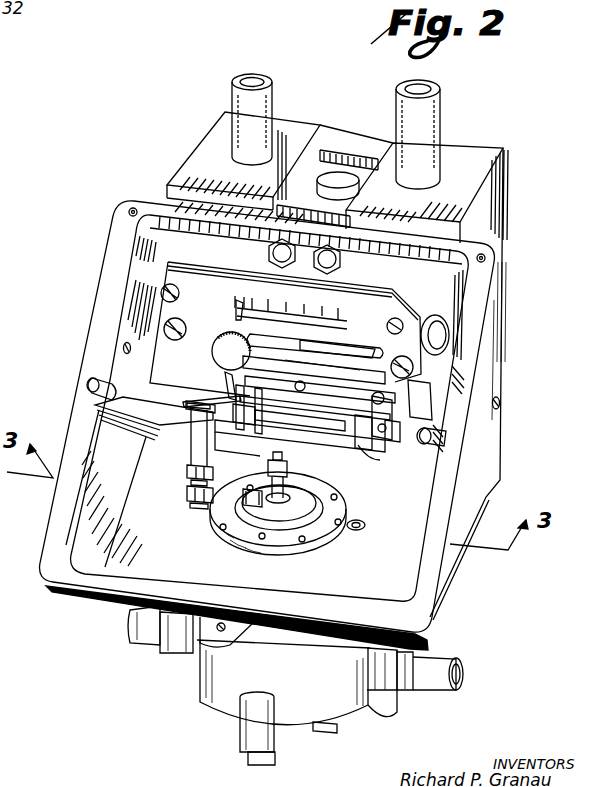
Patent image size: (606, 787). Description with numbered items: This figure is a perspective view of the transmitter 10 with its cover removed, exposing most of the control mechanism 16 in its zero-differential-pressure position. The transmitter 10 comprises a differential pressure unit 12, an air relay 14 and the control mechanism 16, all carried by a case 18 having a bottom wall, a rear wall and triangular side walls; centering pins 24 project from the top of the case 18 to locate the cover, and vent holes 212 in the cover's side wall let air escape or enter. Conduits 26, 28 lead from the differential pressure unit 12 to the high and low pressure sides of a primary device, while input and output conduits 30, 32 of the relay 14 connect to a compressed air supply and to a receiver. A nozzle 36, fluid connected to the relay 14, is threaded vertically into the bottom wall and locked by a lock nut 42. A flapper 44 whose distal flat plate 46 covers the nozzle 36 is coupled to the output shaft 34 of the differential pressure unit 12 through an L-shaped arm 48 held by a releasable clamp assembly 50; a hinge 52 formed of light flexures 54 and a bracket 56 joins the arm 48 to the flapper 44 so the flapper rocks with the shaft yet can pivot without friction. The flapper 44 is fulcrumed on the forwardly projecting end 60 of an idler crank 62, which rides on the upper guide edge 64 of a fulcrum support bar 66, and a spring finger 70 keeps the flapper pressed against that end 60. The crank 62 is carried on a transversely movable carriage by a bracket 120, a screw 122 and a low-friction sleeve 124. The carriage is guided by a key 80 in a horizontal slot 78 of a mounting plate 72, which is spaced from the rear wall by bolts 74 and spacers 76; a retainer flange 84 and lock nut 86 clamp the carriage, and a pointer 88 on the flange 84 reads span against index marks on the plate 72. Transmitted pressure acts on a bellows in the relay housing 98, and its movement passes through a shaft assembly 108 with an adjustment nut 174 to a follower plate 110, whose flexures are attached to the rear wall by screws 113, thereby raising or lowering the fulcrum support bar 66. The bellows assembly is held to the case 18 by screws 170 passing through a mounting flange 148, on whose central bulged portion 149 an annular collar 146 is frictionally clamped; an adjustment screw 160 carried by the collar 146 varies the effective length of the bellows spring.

The transmitter 10 is at (82, 328).
The differential pressure unit 12 is at (506, 214).
The air relay 14 is at (401, 715).
The control mechanism 16 is at (139, 293).
The case 18 is at (496, 375).
The centering pins 24 is at (88, 388).
The conduit 26 is at (270, 103).
The conduit 28 is at (436, 128).
The input conduit 30 is at (147, 637).
The output conduit 32 is at (447, 657).
The output shaft 34 is at (332, 374).
The nozzle 36 is at (187, 447).
The lock nut 42 is at (190, 500).
The flapper 44 is at (214, 408).
The flat plate 46 is at (188, 408).
The L-shaped arm 48 is at (407, 397).
The releasable clamp assembly 50 is at (300, 366).
The hinge 52 is at (353, 447).
The flexures 54 is at (398, 438).
The bracket 56 is at (360, 457).
The fulcrum end 60 is at (242, 432).
The idler crank 62 is at (258, 436).
The upper horizontal edge 64 is at (315, 408).
The fulcrum support bar 66 is at (382, 418).
The spring finger 70 is at (230, 385).
The mounting plate 72 is at (368, 297).
The bolts 74 is at (167, 343).
The spacers 76 is at (433, 318).
The horizontal slot 78 is at (347, 353).
The key 80 is at (276, 352).
The retainer flange 84 is at (255, 338).
The lock nut 86 is at (213, 350).
The pointer 88 is at (230, 312).
The relay housing 98 is at (302, 717).
The shaft assembly 108 is at (291, 489).
The follower plate 110 is at (325, 388).
The screws 113 is at (292, 372).
The bracket 120 is at (183, 410).
The screw 122 is at (300, 420).
The sleeve 124 is at (271, 415).
The annular collar 146 is at (340, 531).
The mounting flange 148 is at (327, 540).
The central bulged portion 149 is at (270, 533).
The adjustment screw 160 is at (255, 513).
The screws 170 is at (340, 492).
The adjustment nut 174 is at (293, 477).
The vent holes 212 is at (500, 400).